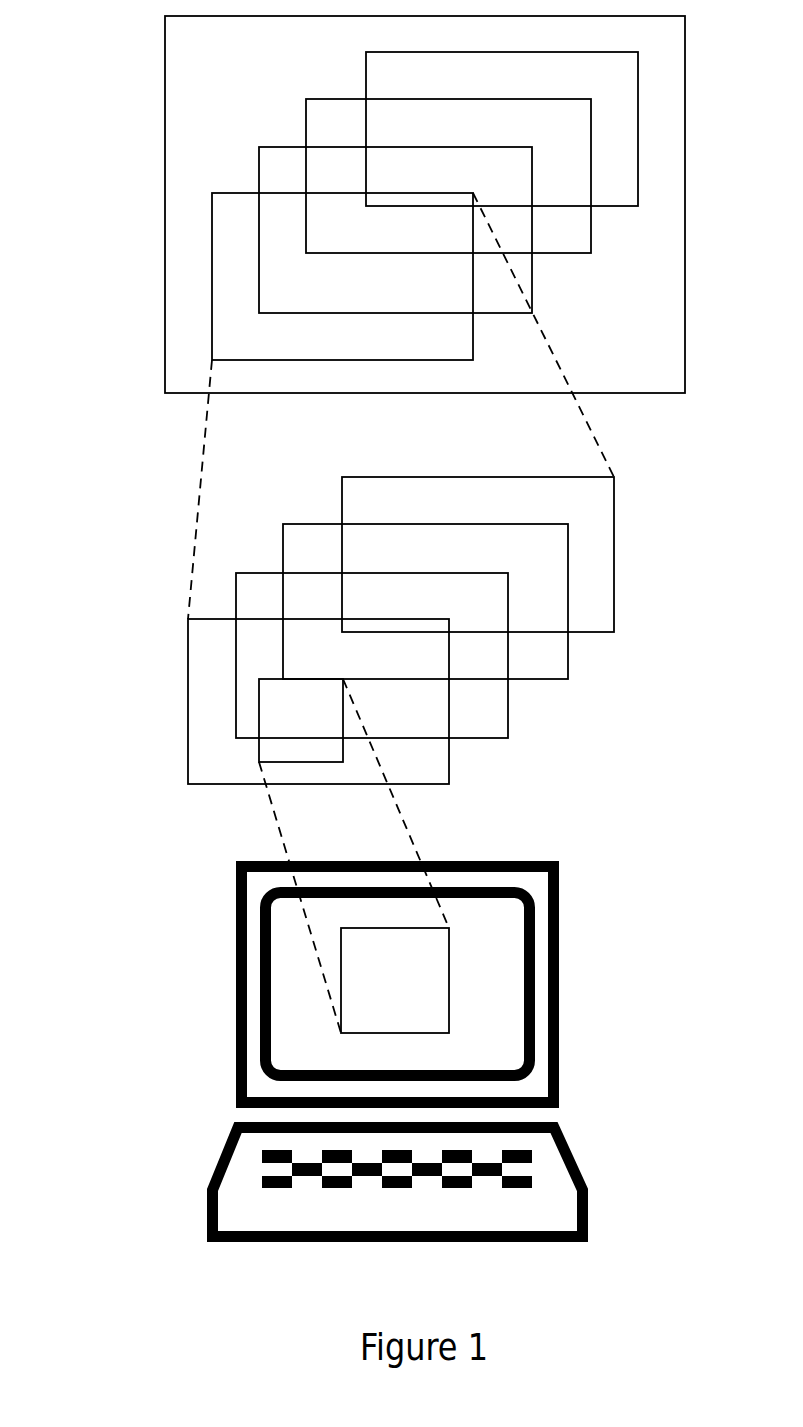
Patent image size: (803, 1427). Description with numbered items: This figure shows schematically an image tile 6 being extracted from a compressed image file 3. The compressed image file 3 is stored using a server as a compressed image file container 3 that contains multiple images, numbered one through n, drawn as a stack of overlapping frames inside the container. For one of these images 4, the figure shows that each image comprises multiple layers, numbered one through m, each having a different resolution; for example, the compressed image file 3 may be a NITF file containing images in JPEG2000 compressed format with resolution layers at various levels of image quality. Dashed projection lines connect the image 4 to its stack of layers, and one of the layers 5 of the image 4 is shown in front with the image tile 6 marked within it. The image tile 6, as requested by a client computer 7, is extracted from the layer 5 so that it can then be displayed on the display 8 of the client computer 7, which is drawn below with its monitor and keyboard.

The compressed image file 3 is at (165, 147).
The image 4 is at (212, 278).
The layer 5 is at (449, 703).
The image tile 6 is at (259, 720).
The client computer 7 is at (578, 1158).
The display 8 is at (293, 987).